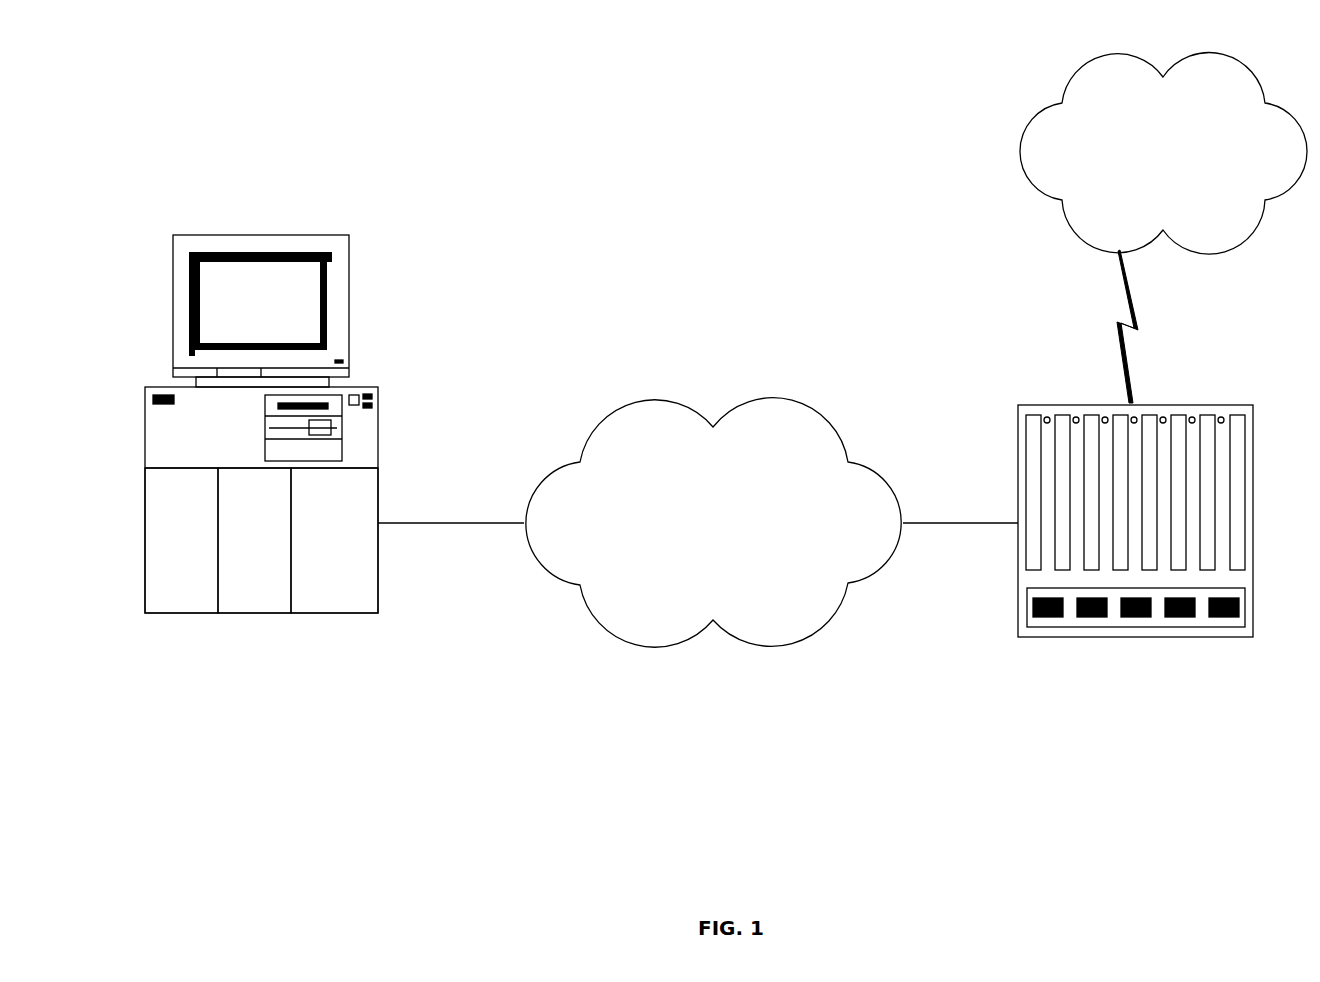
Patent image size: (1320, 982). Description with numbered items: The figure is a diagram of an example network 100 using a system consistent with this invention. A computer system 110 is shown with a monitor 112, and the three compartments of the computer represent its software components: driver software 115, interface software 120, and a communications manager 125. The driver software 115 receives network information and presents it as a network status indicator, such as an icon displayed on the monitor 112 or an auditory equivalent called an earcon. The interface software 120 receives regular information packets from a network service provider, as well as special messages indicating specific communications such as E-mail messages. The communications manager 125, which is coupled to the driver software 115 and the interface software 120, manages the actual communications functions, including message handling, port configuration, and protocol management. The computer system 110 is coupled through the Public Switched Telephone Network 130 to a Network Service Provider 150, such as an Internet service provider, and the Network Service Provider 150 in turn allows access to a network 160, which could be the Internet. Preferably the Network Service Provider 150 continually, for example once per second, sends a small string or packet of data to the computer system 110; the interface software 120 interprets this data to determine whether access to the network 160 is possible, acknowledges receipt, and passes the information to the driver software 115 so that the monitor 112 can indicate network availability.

The network 100 is at (535, 65).
The computer system 110 is at (303, 235).
The monitor 112 is at (320, 292).
The driver software 115 is at (189, 613).
The interface software 120 is at (335, 613).
The communications manager 125 is at (263, 613).
The Public Switched Telephone Network 130 is at (768, 398).
The Network Service Provider 150 is at (1077, 404).
The network 160 is at (1077, 83).